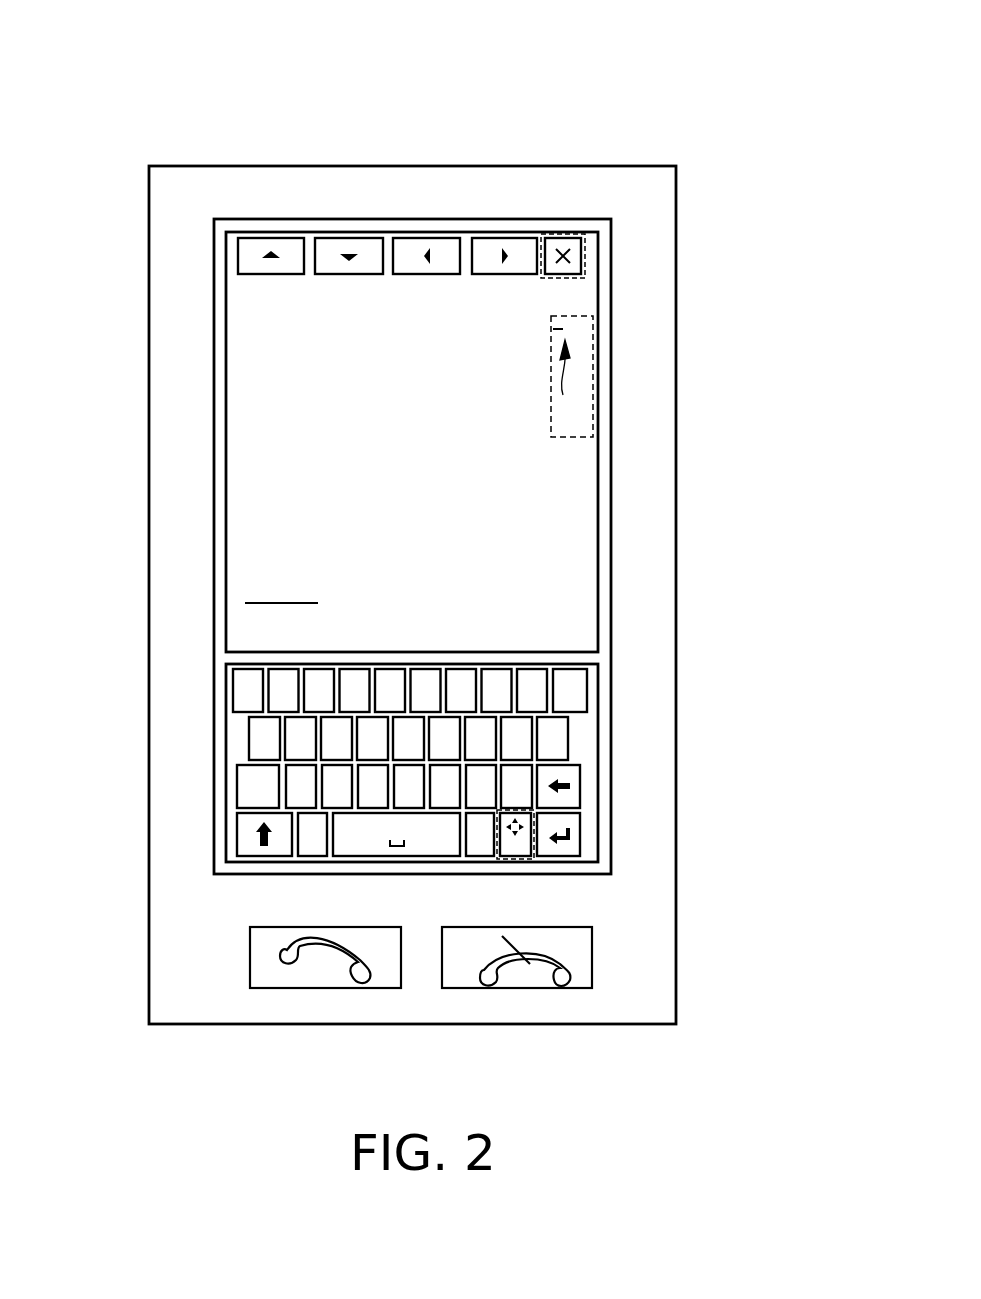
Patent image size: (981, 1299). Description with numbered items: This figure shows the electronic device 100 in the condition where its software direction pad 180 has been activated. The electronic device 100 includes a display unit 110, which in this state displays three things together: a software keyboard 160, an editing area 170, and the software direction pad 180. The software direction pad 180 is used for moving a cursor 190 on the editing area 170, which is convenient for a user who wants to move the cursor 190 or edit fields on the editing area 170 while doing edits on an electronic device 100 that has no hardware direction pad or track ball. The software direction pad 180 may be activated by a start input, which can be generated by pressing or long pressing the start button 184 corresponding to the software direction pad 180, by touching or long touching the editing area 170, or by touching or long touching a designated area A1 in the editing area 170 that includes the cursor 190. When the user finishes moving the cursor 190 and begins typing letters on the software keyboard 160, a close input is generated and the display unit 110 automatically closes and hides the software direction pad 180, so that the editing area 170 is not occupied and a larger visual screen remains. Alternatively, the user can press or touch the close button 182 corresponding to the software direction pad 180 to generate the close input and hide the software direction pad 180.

The electronic device 100 is at (673, 96).
The display unit 110 is at (611, 333).
The software keyboard 160 is at (247, 736).
The editing area 170 is at (248, 523).
The software direction pad 180 is at (248, 258).
The close button 182 is at (586, 253).
The start button 184 is at (519, 860).
The cursor 190 is at (576, 376).
The designated area A1 is at (572, 437).